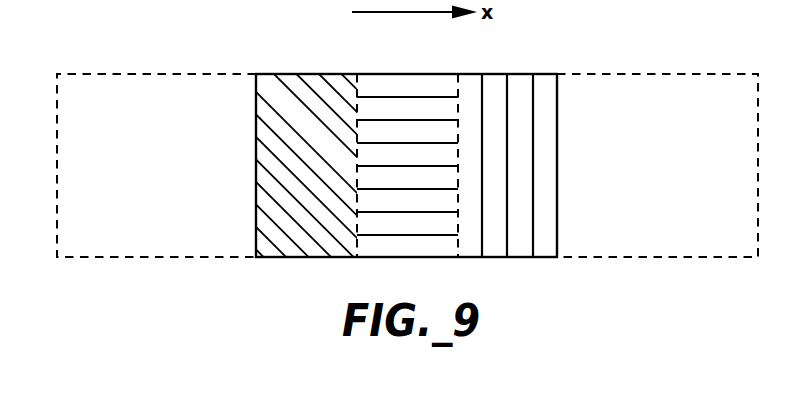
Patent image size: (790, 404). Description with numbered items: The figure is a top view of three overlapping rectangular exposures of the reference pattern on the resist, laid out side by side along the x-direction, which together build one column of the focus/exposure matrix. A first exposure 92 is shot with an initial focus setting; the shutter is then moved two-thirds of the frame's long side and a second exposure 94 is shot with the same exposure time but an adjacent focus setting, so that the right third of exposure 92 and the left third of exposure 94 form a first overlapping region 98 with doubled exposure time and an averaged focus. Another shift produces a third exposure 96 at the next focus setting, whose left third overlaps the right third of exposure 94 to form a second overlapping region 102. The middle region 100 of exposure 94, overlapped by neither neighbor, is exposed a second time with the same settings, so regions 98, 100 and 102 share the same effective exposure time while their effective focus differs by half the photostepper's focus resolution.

The exposure 92 is at (181, 75).
The exposure 94 is at (400, 72).
The exposure 96 is at (627, 73).
The first overlapping region 98 is at (313, 247).
The middle region 100 is at (400, 245).
The second overlapping region 102 is at (518, 245).